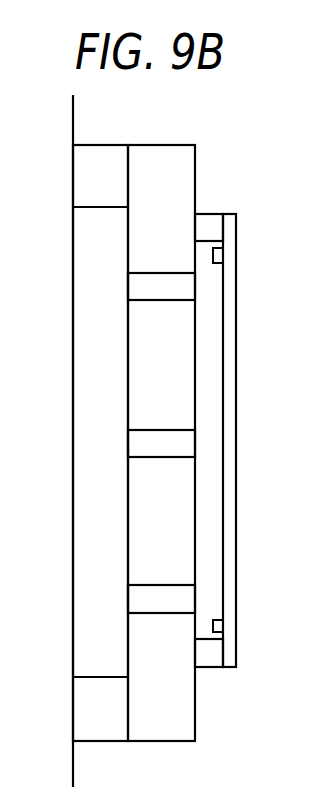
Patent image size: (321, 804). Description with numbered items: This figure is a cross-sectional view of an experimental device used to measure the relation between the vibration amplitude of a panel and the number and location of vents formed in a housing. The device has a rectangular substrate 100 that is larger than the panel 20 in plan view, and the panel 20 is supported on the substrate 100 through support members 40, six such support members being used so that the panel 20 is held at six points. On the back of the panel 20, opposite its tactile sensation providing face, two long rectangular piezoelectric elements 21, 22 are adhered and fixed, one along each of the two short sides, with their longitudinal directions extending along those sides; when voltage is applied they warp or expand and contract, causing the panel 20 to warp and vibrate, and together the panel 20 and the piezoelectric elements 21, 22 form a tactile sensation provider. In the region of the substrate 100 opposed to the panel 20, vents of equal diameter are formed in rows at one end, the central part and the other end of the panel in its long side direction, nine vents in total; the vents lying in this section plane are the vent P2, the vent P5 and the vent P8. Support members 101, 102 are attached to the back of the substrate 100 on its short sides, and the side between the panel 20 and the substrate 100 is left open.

The substrate 100 is at (170, 153).
The support member 101 is at (100, 733).
The support member 102 is at (105, 158).
The panel 20 is at (231, 332).
The piezoelectric element 21 is at (219, 627).
The piezoelectric element 22 is at (219, 256).
The support member 40 is at (212, 222).
The vent P2 is at (140, 285).
The vent P5 is at (136, 441).
The vent P8 is at (138, 597).